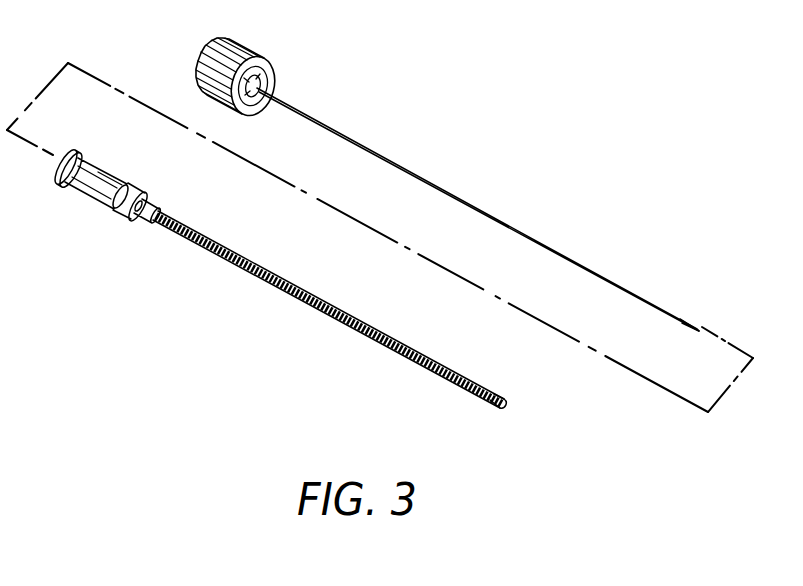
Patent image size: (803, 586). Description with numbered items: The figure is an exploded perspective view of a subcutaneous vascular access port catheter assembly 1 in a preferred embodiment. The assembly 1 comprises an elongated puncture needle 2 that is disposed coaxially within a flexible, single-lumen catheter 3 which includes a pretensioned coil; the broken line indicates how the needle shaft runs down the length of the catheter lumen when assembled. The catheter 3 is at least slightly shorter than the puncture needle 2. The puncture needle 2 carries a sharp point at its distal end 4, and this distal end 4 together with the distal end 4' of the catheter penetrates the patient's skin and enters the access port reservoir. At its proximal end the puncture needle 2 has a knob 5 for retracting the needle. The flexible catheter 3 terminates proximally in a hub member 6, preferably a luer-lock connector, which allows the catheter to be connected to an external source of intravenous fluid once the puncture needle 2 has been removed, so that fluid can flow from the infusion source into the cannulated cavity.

The subcutaneous vascular access port catheter assembly 1 is at (62, 0).
The puncture needle 2 is at (477, 177).
The catheter 3 is at (257, 318).
The distal end of the puncture needle 4 is at (700, 296).
The distal end of the catheter 4' is at (534, 404).
The knob 5 is at (263, 53).
The hub member 6 is at (120, 177).